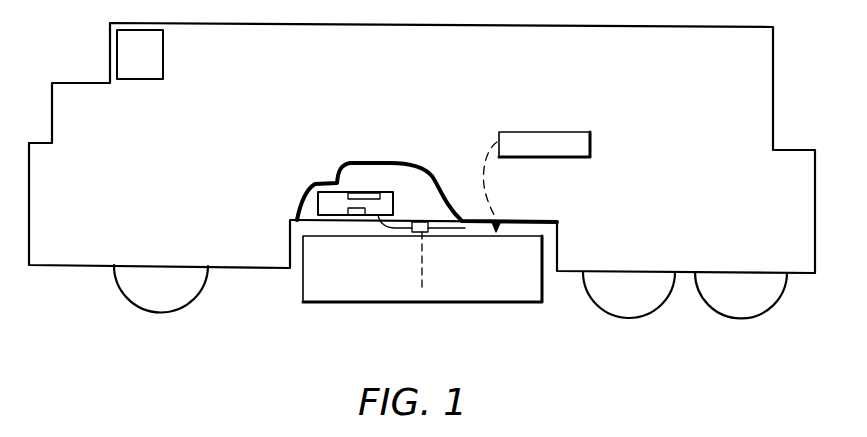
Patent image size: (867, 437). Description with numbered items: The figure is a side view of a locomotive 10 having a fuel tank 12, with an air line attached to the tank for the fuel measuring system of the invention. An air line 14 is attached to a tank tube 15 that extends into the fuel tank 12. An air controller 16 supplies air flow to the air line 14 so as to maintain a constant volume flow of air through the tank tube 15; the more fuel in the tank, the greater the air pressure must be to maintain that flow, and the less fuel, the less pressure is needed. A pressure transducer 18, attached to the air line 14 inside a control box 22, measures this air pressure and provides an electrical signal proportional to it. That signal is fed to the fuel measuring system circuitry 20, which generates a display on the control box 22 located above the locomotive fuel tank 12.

The locomotive 10 is at (443, 82).
The fuel tank 12 is at (378, 271).
The air line 14 is at (499, 233).
The tank tube 15 is at (425, 257).
The air controller 16 is at (576, 132).
The pressure transducer 18 is at (348, 208).
The fuel measuring system circuitry 20 is at (393, 151).
The control box 22 is at (333, 181).